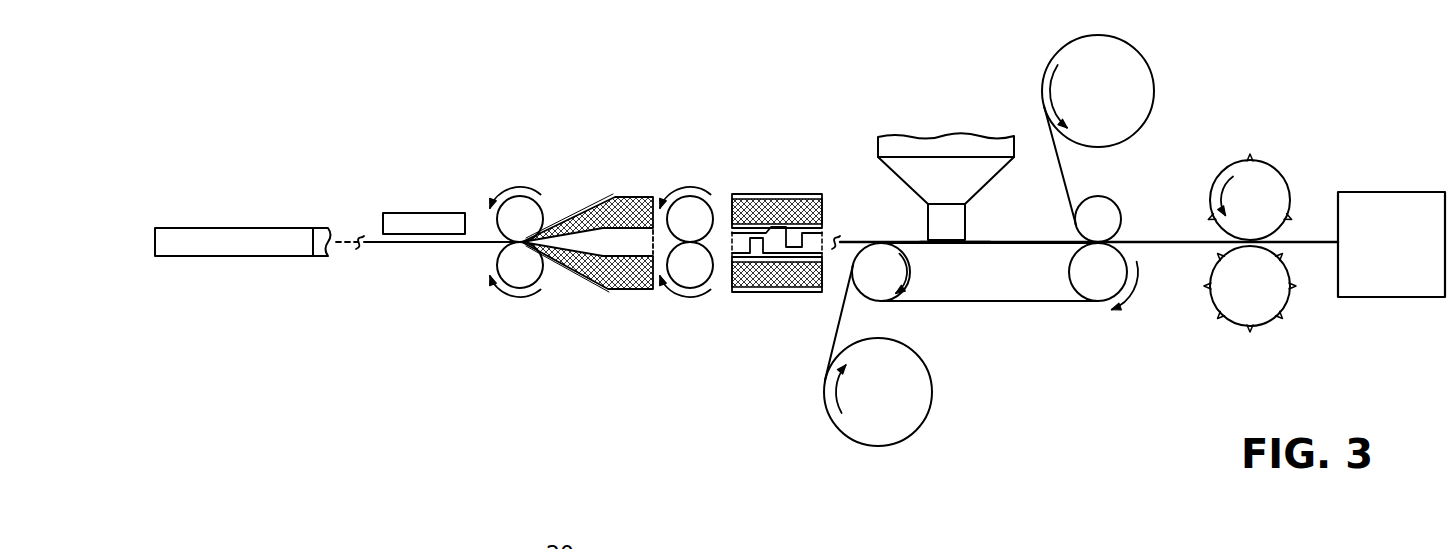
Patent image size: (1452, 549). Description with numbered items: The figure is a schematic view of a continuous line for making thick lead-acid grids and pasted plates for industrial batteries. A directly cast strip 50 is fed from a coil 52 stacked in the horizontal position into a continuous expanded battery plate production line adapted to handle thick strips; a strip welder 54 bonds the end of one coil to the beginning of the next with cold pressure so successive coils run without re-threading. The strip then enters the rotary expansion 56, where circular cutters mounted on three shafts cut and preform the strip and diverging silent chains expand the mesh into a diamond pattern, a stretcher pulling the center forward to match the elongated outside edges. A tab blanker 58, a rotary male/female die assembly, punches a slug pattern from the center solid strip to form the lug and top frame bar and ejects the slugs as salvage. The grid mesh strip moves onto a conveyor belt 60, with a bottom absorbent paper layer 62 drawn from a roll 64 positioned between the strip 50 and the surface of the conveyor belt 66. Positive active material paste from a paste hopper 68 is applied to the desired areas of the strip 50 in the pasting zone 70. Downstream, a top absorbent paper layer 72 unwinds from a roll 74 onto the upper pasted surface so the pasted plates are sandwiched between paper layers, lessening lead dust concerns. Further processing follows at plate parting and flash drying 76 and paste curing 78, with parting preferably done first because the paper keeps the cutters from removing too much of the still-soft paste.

The strip 50 is at (418, 244).
The coil 52 is at (261, 257).
The strip welder 54 is at (435, 212).
The rotary expansion 56 is at (620, 188).
The tab blanker 58 is at (795, 190).
The conveyor belt 60 is at (1052, 303).
The bottom absorbent paper layer 62 is at (834, 340).
The roll 64 is at (933, 387).
The surface of the conveyor belt 66 is at (908, 240).
The paste hopper 68 is at (948, 136).
The pasting zone 70 is at (956, 254).
The top absorbent paper layer 72 is at (1064, 177).
The roll 74 is at (1145, 61).
The plate parting and flash drying 76 is at (1279, 172).
The paste curing 78 is at (1415, 192).